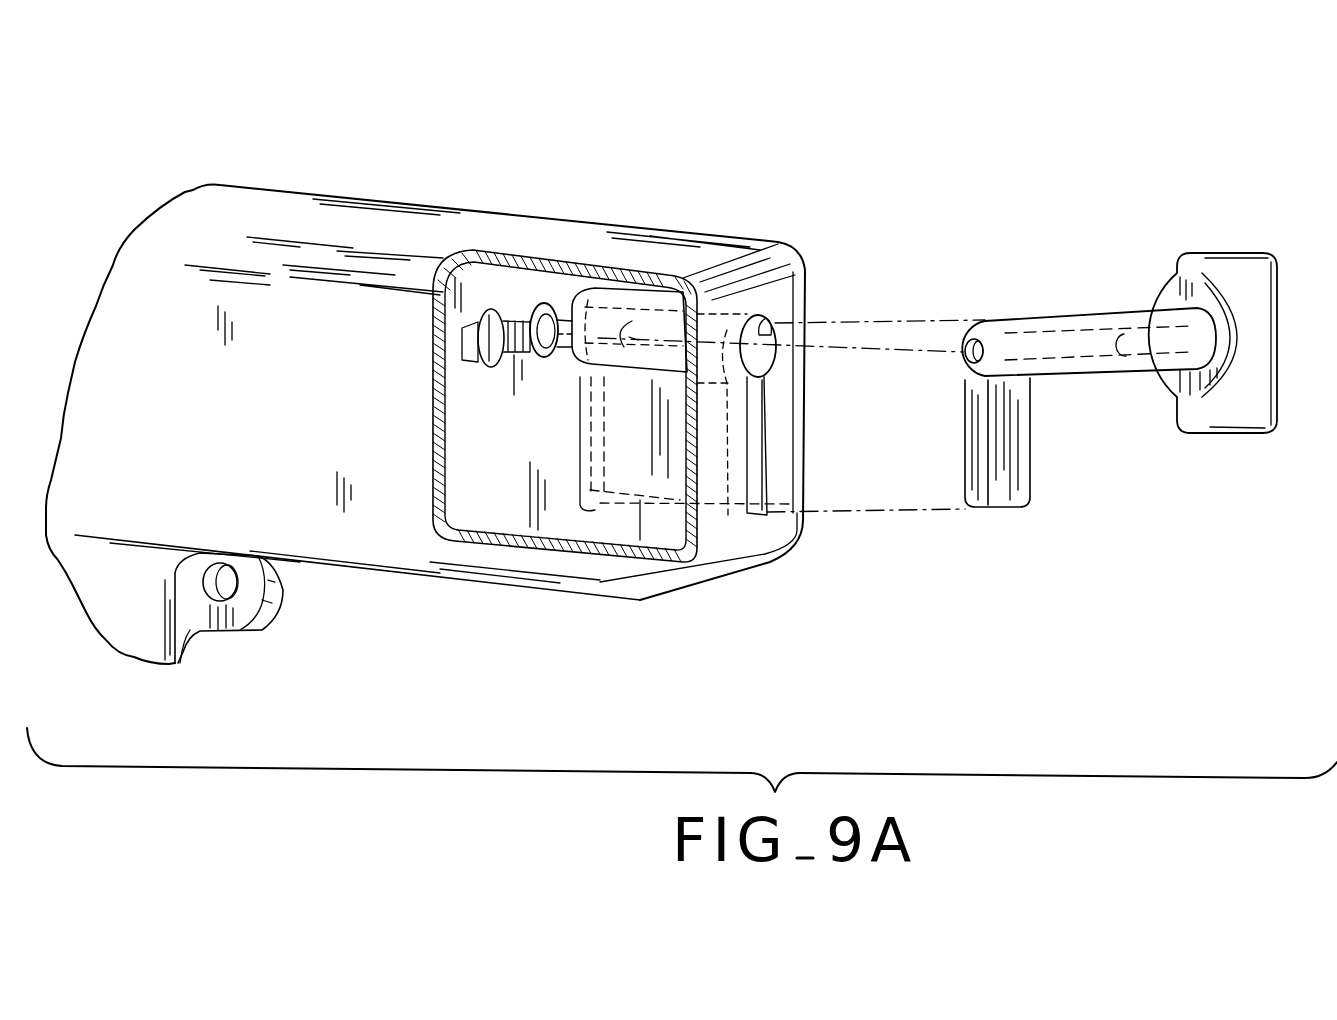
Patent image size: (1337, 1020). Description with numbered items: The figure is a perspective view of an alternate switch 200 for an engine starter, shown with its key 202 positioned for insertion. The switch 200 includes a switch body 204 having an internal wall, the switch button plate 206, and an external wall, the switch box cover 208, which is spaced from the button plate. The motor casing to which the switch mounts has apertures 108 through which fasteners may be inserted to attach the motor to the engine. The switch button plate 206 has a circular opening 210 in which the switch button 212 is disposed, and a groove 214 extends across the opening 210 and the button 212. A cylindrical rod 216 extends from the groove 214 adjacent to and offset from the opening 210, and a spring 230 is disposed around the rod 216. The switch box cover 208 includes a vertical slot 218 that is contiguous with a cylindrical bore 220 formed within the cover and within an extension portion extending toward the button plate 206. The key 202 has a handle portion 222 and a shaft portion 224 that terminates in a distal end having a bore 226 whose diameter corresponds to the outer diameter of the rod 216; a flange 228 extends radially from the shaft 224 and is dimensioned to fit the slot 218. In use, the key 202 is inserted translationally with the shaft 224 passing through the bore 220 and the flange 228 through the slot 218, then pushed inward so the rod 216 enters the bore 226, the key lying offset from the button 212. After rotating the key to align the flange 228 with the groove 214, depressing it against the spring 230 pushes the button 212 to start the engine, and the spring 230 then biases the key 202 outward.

The apertures 108 is at (233, 597).
The switch 200 is at (395, 172).
The key 202 is at (1095, 238).
The switch body 204 is at (355, 389).
The switch button plate 206 is at (514, 466).
The switch box cover 208 is at (733, 543).
The circular opening 210 is at (488, 310).
The switch button 212 is at (478, 338).
The groove 214 is at (506, 354).
The cylindrical rod 216 is at (573, 292).
The vertical slot 218 is at (768, 466).
The cylindrical bore 220 is at (762, 332).
The handle portion 222 is at (1253, 277).
The shaft portion 224 is at (1147, 352).
The bore 226 is at (967, 357).
The flange 228 is at (1020, 463).
The spring 230 is at (545, 303).